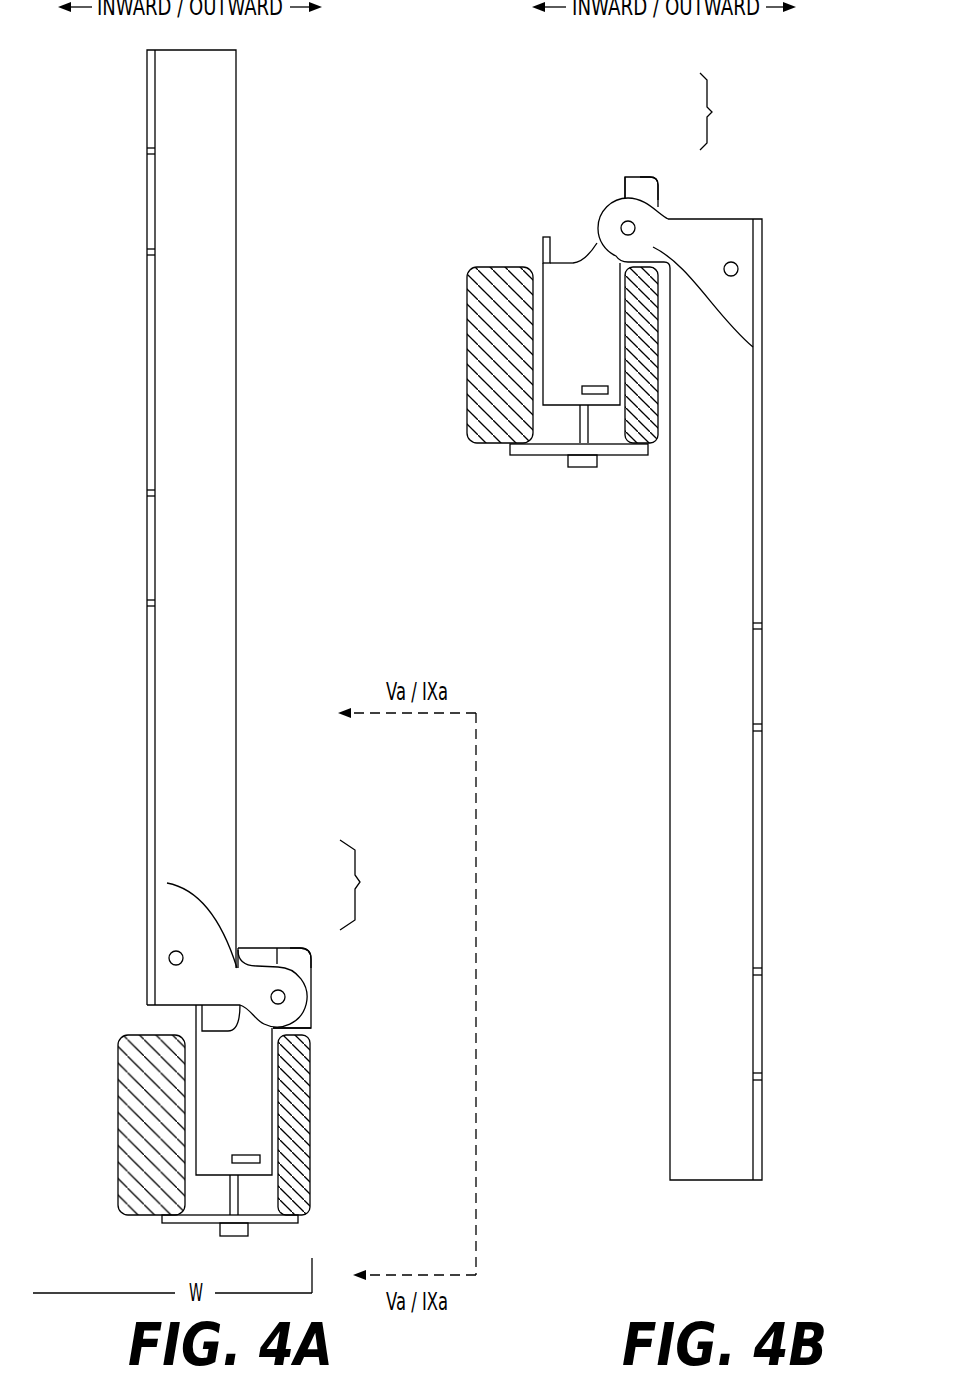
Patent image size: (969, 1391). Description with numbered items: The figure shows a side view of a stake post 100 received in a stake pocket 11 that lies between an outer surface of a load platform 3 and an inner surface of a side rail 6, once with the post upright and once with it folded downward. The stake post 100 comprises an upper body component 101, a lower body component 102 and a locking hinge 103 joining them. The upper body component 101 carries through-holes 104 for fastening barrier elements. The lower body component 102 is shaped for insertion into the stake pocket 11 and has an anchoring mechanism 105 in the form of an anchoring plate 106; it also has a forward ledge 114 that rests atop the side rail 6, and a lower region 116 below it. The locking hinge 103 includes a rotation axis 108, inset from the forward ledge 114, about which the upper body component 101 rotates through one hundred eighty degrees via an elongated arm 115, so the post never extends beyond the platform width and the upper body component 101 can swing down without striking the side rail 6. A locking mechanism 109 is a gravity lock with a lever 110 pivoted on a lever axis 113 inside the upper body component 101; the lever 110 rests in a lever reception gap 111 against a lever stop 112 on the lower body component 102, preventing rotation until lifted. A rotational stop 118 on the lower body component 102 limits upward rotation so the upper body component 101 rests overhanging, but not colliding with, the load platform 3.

In FIG. 4A, the stake post 100 is at (268, 63).
In FIG. 4B, the stake post 100 is at (838, 190).
In FIG. 4A, the upper body component 101 is at (222, 718).
In FIG. 4B, the upper body component 101 is at (718, 575).
In FIG. 4A, the lower body component 102 is at (248, 1146).
In FIG. 4B, the lower body component 102 is at (583, 250).
In FIG. 4A, the locking hinge 103 is at (360, 968).
In FIG. 4B, the locking hinge 103 is at (683, 188).
In FIG. 4A, the through-holes 104 is at (150, 152).
In FIG. 4B, the through-holes 104 is at (760, 626).
In FIG. 4A, the anchoring mechanism 105 is at (180, 1230).
In FIG. 4B, the anchoring mechanism 105 is at (497, 480).
In FIG. 4A, the anchoring plate 106 is at (268, 1219).
In FIG. 4B, the anchoring plate 106 is at (558, 460).
In FIG. 4A, the rotation axis 108 is at (285, 997).
In FIG. 4B, the rotation axis 108 is at (635, 228).
In FIG. 4A, the locking mechanism 109 is at (362, 882).
In FIG. 4B, the locking mechanism 109 is at (713, 112).
In FIG. 4A, the lever 110 is at (258, 952).
In FIG. 4A, the lever reception gap 111 is at (258, 952).
In FIG. 4B, the lever reception gap 111 is at (600, 190).
In FIG. 4A, the lever stop 112 is at (296, 950).
In FIG. 4B, the lever stop 112 is at (638, 183).
In FIG. 4A, the lever axis 113 is at (169, 958).
In FIG. 4B, the lever axis 113 is at (738, 273).
In FIG. 4A, the forward ledge 114 is at (313, 1020).
In FIG. 4A, the elongated arm 115 is at (167, 883).
In FIG. 4B, the elongated arm 115 is at (753, 347).
In FIG. 4A, the lower region 116 is at (247, 1093).
In FIG. 4B, the lower region 116 is at (560, 290).
In FIG. 4A, the rotational stop 118 is at (187, 1027).
In FIG. 4B, the rotational stop 118 is at (547, 237).
In FIG. 4A, the load platform 3 is at (137, 1099).
In FIG. 4B, the load platform 3 is at (497, 337).
In FIG. 4A, the side rail 6 is at (300, 1108).
In FIG. 4B, the side rail 6 is at (645, 437).
In FIG. 4A, the stake pocket 11 is at (262, 1200).
In FIG. 4B, the stake pocket 11 is at (547, 427).